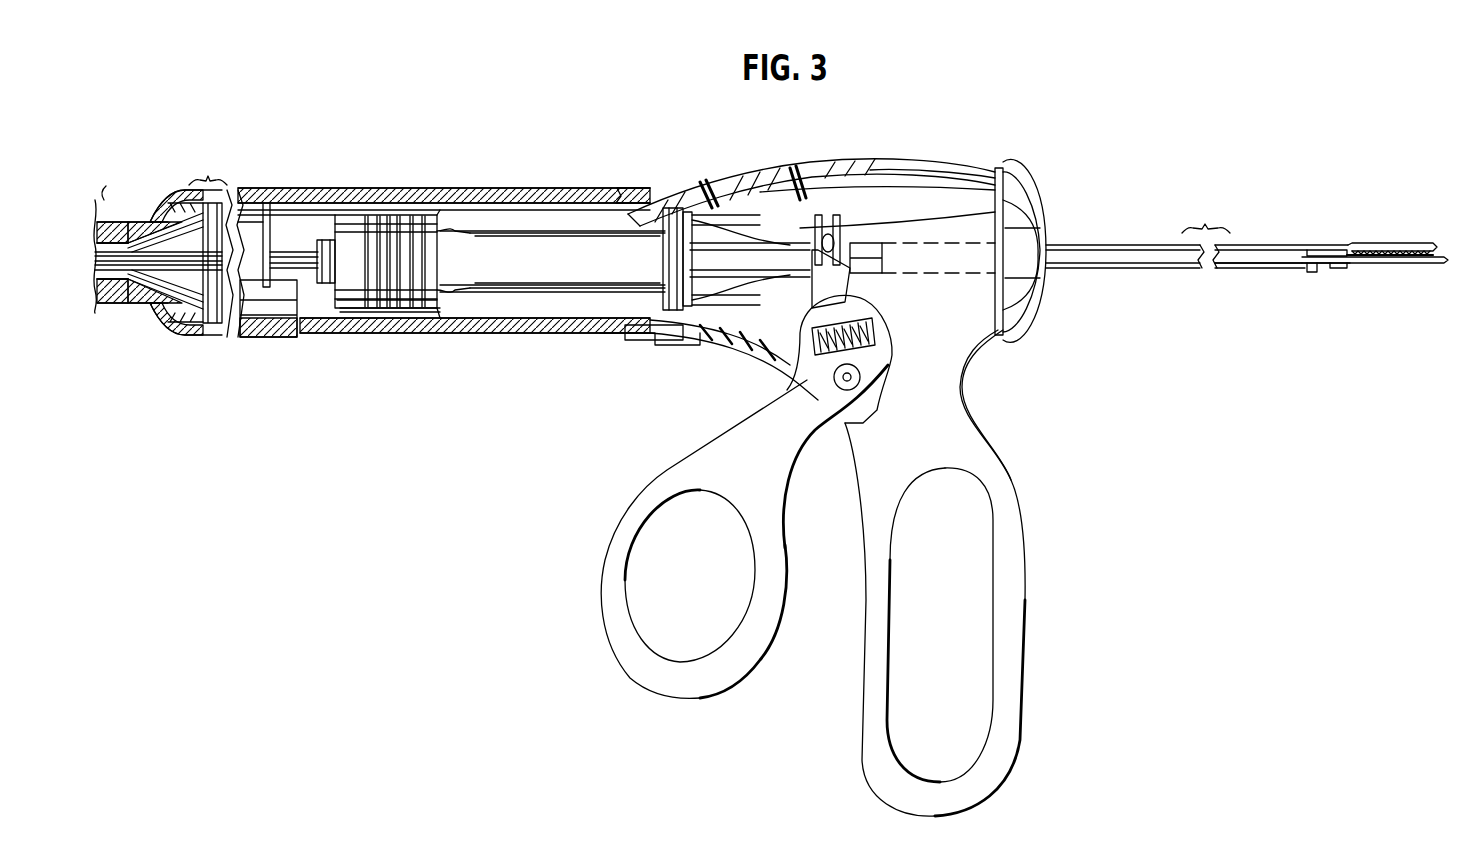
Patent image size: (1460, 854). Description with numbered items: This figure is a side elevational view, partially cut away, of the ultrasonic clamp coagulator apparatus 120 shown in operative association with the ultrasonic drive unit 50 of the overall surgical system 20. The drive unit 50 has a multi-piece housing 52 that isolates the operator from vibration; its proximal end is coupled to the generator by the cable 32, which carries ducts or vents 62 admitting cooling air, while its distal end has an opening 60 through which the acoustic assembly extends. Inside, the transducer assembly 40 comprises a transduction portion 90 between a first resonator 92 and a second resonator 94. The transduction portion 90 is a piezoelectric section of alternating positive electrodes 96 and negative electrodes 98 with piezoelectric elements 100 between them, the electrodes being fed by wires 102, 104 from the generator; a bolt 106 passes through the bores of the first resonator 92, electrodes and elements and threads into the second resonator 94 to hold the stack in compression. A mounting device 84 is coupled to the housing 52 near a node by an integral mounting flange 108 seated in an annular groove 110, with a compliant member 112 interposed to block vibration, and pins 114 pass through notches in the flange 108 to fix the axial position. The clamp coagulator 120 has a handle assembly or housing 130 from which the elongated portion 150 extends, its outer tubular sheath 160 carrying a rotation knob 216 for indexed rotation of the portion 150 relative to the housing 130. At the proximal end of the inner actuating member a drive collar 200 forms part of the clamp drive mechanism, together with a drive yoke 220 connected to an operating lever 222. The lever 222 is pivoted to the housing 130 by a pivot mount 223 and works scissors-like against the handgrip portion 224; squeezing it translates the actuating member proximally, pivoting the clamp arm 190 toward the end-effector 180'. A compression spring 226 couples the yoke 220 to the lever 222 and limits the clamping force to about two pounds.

The ultrasonic clamp coagulator apparatus 20 is at (955, 100).
The cable 32 is at (128, 302).
The transducer assembly 40 is at (438, 202).
The ultrasonic drive unit 50 is at (268, 407).
The multi-piece housing 52 is at (297, 184).
The opening 60 is at (745, 240).
The ducts or vents 62 is at (167, 242).
The mounting device 84 is at (636, 220).
The transduction portion 90 is at (428, 216).
The first resonator 92 is at (353, 320).
The second resonator 94 is at (467, 278).
The positive electrodes 96 is at (377, 320).
The negative electrodes 98 is at (357, 240).
The piezoelectric elements 100 is at (425, 322).
The wire 102 is at (290, 216).
The wire 104 is at (340, 318).
The bolt 106 is at (362, 300).
The mounting flange 108 is at (702, 208).
The annular groove 110 is at (681, 322).
The compliant member 112 is at (678, 210).
The pins 114 is at (650, 257).
The ultrasonic clamp coagulator apparatus 120 is at (1053, 185).
The housing 130 is at (901, 158).
The elongated portion 150 is at (1250, 237).
The outer tubular sheath 160 is at (1167, 268).
The end-effector 180' is at (1375, 297).
The clamp arm 190 is at (1385, 244).
The drive collar 200 is at (1000, 227).
The rotation knob 216 is at (955, 336).
The drive yoke 220 is at (886, 291).
The operating lever 222 is at (641, 485).
The pivot mount 223 is at (846, 385).
The handgrip portion 224 is at (1022, 540).
The spring 226 is at (880, 333).